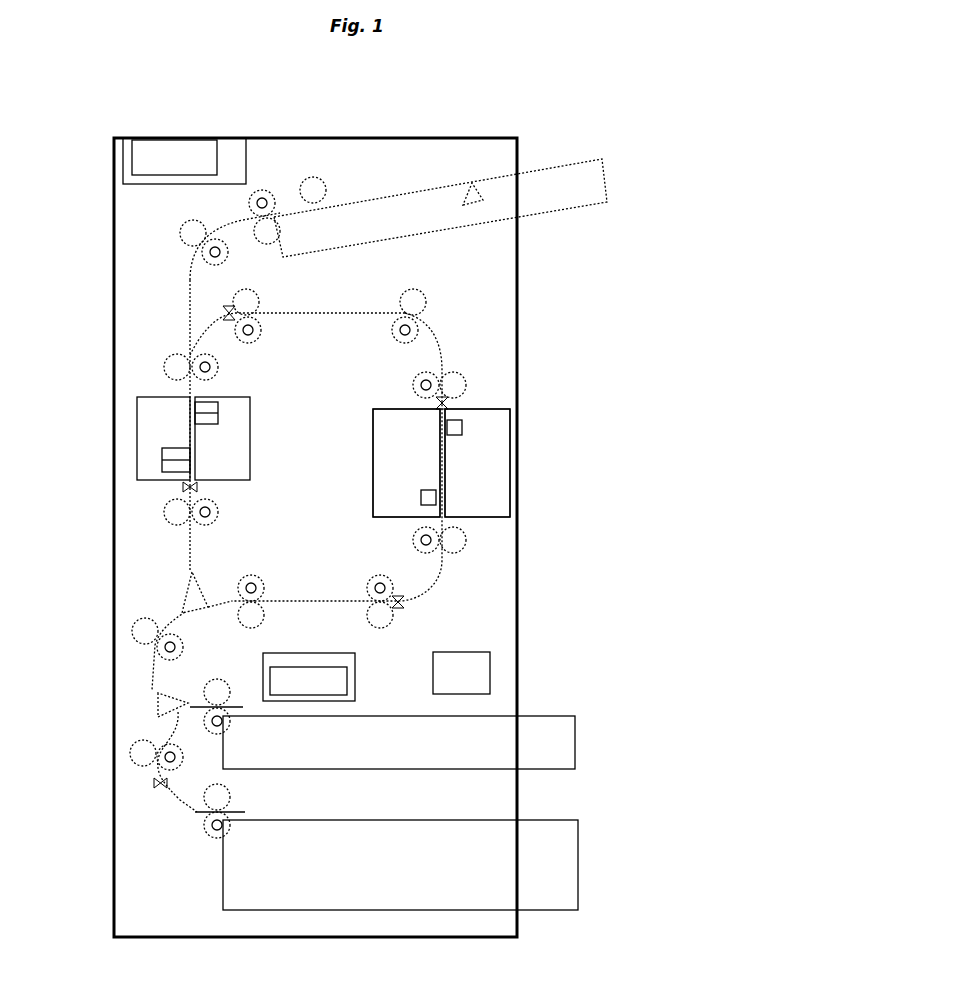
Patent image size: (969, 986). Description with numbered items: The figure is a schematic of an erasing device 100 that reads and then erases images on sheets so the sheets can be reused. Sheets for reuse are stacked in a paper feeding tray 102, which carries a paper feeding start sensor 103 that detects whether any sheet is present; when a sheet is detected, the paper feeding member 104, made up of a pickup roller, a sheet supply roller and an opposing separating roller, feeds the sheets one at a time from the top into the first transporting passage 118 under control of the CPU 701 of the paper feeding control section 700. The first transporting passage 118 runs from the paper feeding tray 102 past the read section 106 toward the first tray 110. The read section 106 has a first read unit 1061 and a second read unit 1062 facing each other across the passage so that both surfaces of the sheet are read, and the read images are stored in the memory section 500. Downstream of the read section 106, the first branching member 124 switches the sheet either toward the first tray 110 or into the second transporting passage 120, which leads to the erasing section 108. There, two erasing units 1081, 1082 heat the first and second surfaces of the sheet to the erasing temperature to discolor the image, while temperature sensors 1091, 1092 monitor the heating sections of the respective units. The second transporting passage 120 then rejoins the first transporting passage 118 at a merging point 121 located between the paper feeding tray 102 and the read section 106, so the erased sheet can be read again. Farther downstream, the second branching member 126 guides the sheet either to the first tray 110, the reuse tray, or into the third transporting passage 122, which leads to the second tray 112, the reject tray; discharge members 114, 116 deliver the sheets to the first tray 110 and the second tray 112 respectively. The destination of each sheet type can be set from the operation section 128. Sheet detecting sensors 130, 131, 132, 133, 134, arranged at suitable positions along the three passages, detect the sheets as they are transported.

The erasing device 100 is at (643, 227).
The paper feeding tray 102 is at (563, 160).
The paper feeding start sensor 103 is at (471, 182).
The paper feeding member 104 is at (265, 188).
The read section 106 is at (266, 400).
The first read unit 1061 is at (185, 457).
The second read unit 1062 is at (197, 410).
The erasing section 108 is at (620, 408).
The erasing unit 1081 is at (450, 462).
The erasing unit 1082 is at (497, 473).
The temperature sensor 1091 is at (420, 498).
The temperature sensor 1092 is at (455, 425).
The first tray 110 is at (580, 742).
The second tray 112 is at (582, 858).
The discharge member 114 is at (225, 735).
The discharge member 116 is at (200, 818).
The first transporting passage 118 is at (203, 243).
The second transporting passage 120 is at (290, 600).
The merging point 121 is at (190, 350).
The third transporting passage 122 is at (155, 750).
The first branching member 124 is at (185, 585).
The second branching member 126 is at (158, 705).
The operation section 128 is at (183, 155).
The sheet detecting sensor 130 is at (180, 487).
The sheet detecting sensor 131 is at (455, 605).
The sheet detecting sensor 132 is at (447, 402).
The sheet detecting sensor 133 is at (222, 310).
The sheet detecting sensor 134 is at (154, 783).
The memory section 500 is at (490, 678).
The paper feeding control section 700 is at (345, 660).
The CPU 701 is at (345, 690).